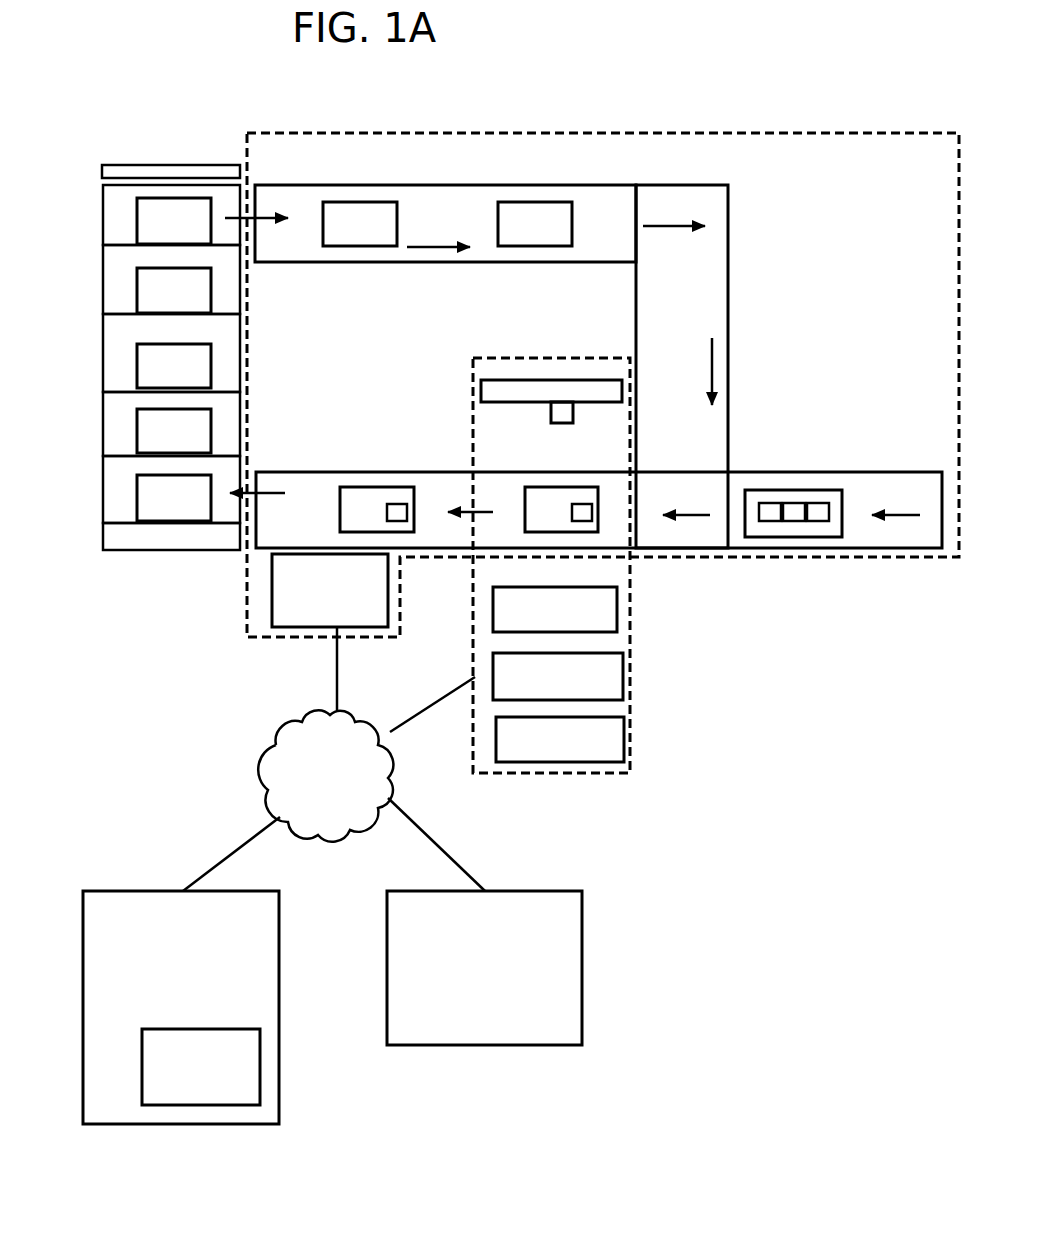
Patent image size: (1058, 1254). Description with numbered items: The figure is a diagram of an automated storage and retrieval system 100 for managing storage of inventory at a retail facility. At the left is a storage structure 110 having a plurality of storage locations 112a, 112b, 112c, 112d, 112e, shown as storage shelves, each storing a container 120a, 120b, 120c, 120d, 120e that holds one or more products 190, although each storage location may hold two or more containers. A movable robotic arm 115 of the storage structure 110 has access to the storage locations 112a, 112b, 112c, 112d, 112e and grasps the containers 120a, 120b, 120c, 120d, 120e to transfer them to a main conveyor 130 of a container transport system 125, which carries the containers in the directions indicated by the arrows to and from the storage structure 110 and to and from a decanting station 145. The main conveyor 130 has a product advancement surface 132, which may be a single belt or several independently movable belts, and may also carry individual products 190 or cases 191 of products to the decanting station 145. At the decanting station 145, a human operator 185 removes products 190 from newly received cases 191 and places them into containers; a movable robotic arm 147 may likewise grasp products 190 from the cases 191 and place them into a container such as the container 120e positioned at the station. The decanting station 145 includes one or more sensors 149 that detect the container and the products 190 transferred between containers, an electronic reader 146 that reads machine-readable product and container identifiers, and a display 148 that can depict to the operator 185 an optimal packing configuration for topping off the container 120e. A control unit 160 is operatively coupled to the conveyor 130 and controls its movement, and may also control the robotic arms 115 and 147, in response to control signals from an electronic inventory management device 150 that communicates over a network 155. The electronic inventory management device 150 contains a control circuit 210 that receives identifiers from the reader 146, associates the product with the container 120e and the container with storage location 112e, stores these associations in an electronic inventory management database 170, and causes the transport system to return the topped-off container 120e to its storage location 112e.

The automated storage and retrieval system 100 is at (685, 100).
The storage structure 110 is at (180, 551).
The storage location 112a is at (120, 246).
The storage location 112b is at (120, 315).
The storage location 112c is at (120, 393).
The storage location 112d is at (120, 457).
The storage location 112e is at (120, 524).
The movable robotic arm 115 is at (173, 164).
The container 120a is at (212, 498).
The container 120b is at (211, 441).
The container 120c is at (211, 375).
The container 120d is at (211, 301).
The container 120e is at (137, 214).
The container transport system 125 is at (773, 133).
The main conveyor 130 is at (716, 318).
The product advancement surface 132 is at (598, 366).
The decanting station 145 is at (588, 776).
The electronic reader 146 is at (619, 604).
The movable robotic arm 147 is at (507, 380).
The display 148 is at (527, 652).
The sensor 149 is at (551, 411).
The electronic inventory management device 150 is at (83, 927).
The network 155 is at (262, 773).
The control unit 160 is at (298, 630).
The electronic inventory management database 170 is at (558, 891).
The human operator 185 is at (505, 763).
The product 190 is at (400, 504).
The case 191 is at (760, 490).
The control circuit 210 is at (142, 1047).